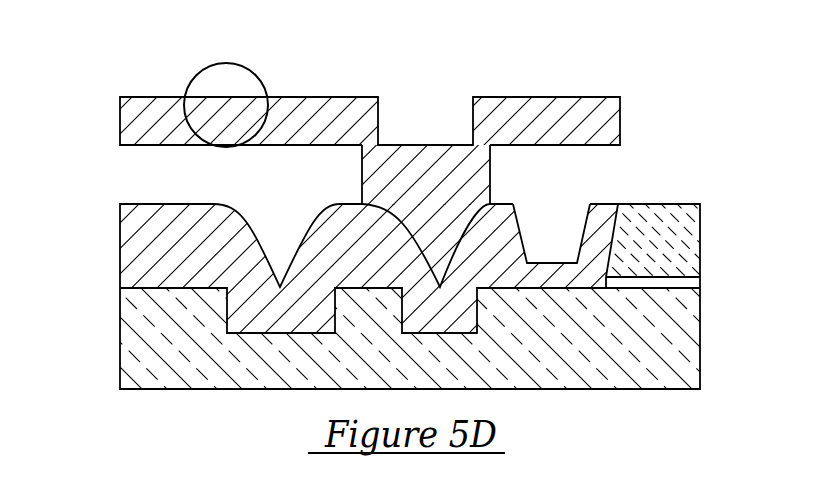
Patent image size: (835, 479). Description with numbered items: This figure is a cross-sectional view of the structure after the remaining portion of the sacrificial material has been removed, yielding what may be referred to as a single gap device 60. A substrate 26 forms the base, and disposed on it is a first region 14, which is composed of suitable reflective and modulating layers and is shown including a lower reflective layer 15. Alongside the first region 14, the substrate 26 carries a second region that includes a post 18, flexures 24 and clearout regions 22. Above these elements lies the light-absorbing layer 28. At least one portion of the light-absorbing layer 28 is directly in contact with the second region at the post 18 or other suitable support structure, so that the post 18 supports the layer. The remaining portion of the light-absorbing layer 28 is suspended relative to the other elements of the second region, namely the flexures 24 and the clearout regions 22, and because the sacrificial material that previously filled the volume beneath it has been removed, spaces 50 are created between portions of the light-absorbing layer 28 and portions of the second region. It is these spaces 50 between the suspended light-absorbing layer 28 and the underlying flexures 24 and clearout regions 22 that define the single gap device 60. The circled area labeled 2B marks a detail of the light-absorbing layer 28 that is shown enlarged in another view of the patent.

The imprint template 60 is at (348, 200).
The template base 28 is at (598, 117).
The first recess 22 is at (267, 246).
The second recess 18 is at (429, 229).
The trench 24 is at (554, 252).
The device feature region 14 is at (690, 241).
The thin layer 15 is at (687, 283).
The substrate 26 is at (142, 345).
The gap 50 is at (188, 178).
The detail view circle 2B is at (272, 62).